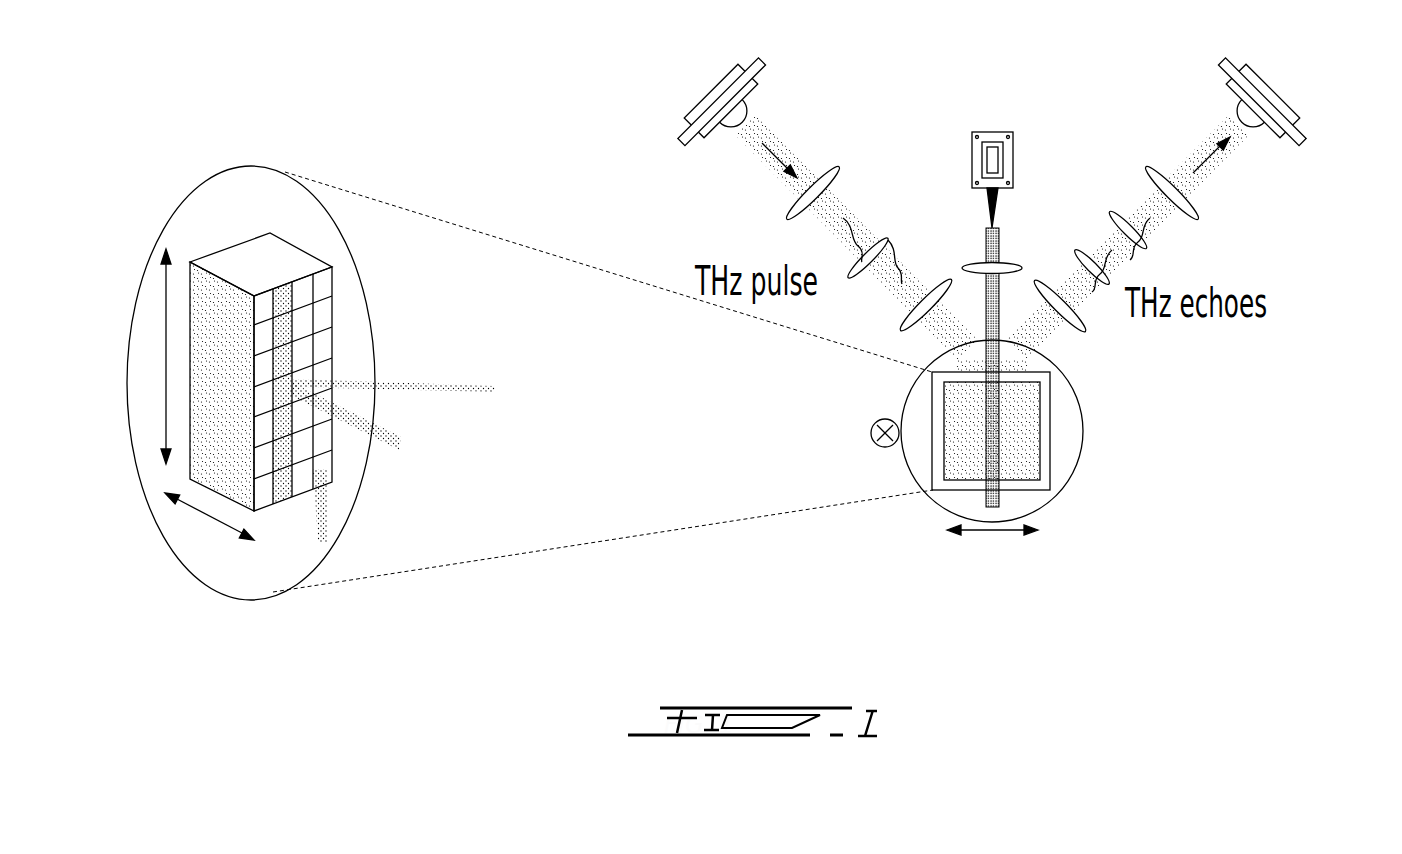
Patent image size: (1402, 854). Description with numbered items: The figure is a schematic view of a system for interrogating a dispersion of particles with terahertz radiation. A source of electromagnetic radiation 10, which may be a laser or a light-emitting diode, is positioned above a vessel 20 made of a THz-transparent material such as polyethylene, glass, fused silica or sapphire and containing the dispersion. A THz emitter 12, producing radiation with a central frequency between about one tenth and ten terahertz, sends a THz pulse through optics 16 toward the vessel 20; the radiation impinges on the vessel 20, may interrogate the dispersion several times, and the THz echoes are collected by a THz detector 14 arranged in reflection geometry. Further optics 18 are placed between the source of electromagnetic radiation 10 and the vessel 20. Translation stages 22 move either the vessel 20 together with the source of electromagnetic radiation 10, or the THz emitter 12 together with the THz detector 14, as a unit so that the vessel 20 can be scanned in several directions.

The source of electromagnetic radiation 10 is at (1013, 160).
The THz emitter 12 is at (681, 131).
The THz detector 14 is at (1305, 132).
The optics 16 is at (838, 168).
The optics 18 is at (1015, 266).
The vessel 20 is at (1078, 464).
The translation stages 22 is at (166, 356).